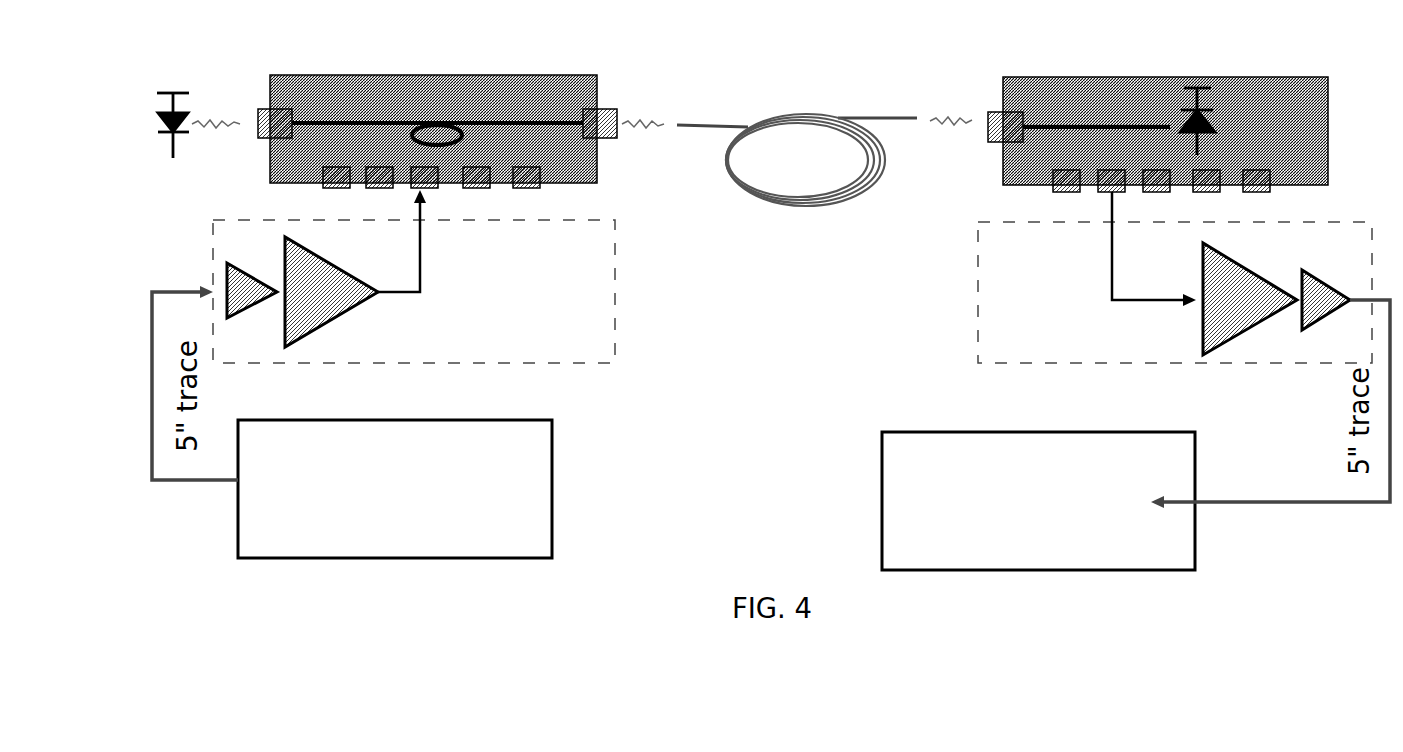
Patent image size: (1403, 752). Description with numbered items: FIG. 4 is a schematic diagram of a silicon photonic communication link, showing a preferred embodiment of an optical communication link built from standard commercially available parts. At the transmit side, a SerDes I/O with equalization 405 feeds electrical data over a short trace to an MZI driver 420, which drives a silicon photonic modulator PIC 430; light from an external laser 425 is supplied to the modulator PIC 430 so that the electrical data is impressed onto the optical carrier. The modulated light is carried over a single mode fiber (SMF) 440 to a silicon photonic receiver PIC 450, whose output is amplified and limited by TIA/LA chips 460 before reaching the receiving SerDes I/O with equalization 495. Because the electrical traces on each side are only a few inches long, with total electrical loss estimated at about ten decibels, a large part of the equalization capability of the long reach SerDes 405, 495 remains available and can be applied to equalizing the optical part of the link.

The SerDes I/O with equalization 405 is at (395, 489).
The MZI driver 420 is at (414, 277).
The external laser 425 is at (196, 130).
The silicon photonic modulator PIC 430 is at (437, 107).
The single mode fiber (SMF) 440 is at (797, 176).
The silicon photonic receiver PIC 450 is at (1158, 109).
The TIA/LA chips 460 is at (1175, 279).
The SerDes I/O with equalization 495 is at (1038, 501).